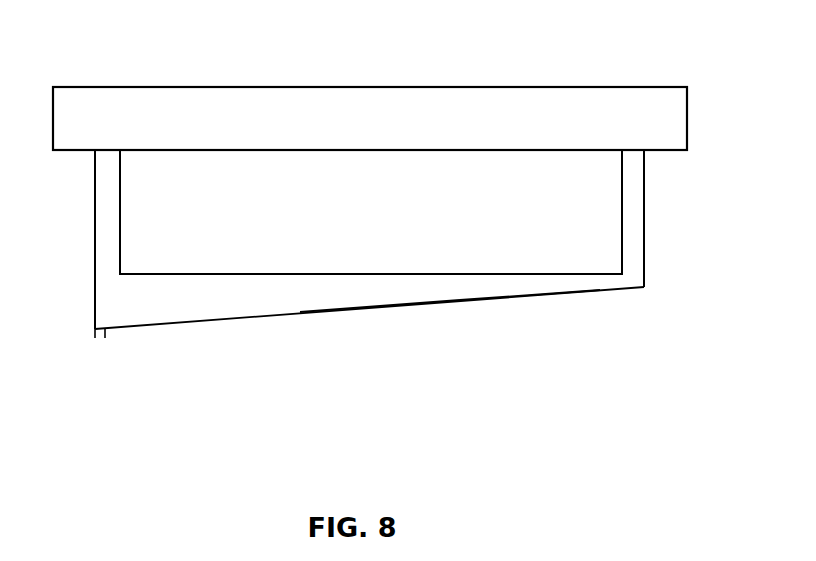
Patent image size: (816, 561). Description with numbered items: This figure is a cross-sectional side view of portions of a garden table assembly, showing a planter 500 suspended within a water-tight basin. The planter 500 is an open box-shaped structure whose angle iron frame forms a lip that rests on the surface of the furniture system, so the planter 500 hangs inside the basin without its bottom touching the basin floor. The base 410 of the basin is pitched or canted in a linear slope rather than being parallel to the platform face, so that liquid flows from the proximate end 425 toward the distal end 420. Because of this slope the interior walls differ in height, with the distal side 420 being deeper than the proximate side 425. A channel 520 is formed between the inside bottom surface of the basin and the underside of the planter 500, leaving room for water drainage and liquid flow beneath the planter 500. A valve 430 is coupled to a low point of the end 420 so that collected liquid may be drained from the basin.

The base 410 is at (378, 307).
The distal end 420 is at (93, 330).
The proximate end 425 is at (644, 287).
The valve 430 is at (105, 331).
The planter 500 is at (272, 274).
The channel 520 is at (478, 285).